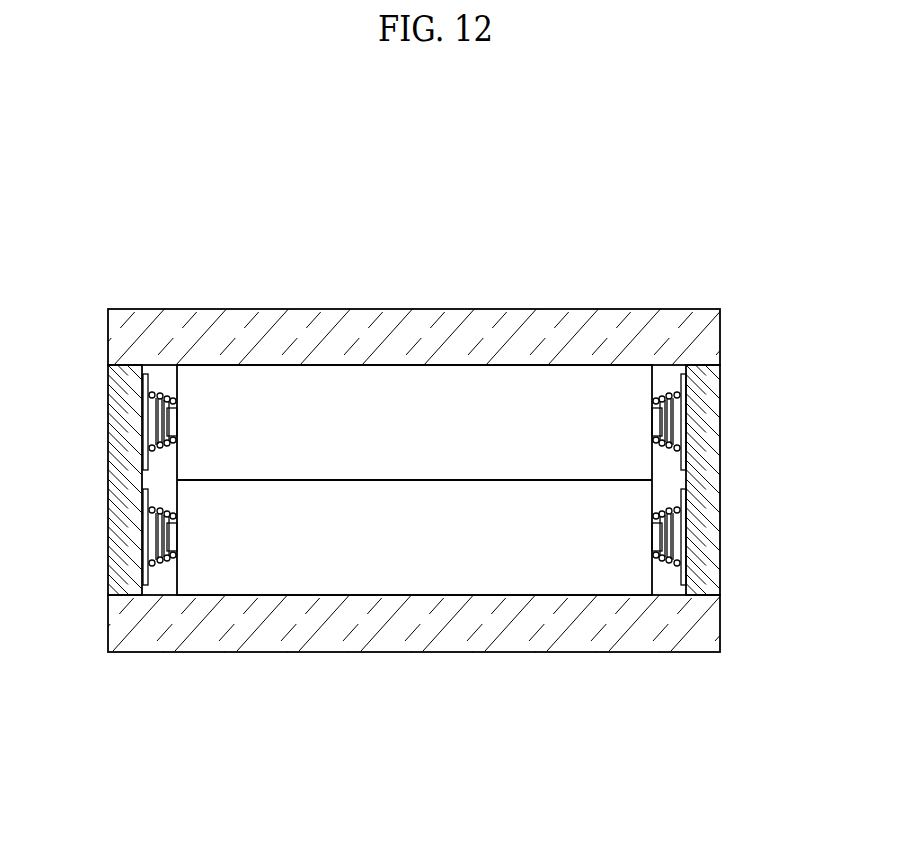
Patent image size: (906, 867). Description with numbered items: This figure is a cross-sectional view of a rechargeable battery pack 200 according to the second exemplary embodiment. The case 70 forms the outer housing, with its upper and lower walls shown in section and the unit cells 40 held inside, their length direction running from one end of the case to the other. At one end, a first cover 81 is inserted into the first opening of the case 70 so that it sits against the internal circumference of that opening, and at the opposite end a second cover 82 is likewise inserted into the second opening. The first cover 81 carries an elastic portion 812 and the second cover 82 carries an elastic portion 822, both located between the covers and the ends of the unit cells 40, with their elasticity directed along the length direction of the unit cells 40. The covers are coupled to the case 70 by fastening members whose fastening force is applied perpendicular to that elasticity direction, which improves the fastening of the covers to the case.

The rechargeable battery pack 200 is at (446, 134).
The case 70 is at (484, 331).
The first cover 81 is at (127, 540).
The elastic portion 812 is at (147, 452).
The second cover 82 is at (710, 532).
The elastic portion 822 is at (684, 562).
The unit cells 40 is at (368, 462).